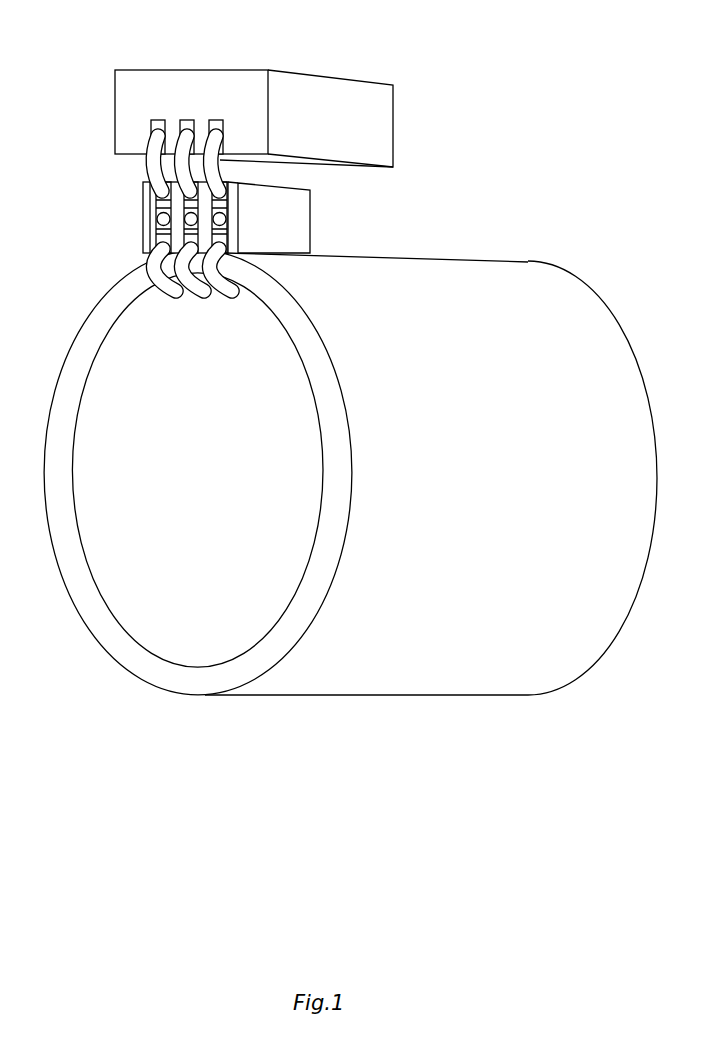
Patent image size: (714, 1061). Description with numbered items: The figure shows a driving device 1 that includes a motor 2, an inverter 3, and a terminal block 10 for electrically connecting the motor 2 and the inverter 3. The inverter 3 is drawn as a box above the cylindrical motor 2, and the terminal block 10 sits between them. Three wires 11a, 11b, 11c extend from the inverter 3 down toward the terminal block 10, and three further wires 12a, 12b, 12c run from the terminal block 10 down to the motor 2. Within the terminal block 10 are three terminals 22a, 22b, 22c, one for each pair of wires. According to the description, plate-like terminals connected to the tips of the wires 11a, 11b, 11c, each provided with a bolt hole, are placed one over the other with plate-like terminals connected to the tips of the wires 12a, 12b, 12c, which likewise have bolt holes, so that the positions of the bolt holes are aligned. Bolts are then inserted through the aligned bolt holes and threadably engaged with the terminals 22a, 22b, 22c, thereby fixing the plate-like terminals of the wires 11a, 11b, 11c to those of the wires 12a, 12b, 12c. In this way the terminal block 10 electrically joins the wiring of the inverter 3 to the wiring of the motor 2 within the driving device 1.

The driving device 1 is at (531, 97).
The motor 2 is at (576, 276).
The inverter 3 is at (302, 70).
The terminal block 10 is at (312, 221).
The wire 11a is at (150, 140).
The wire 11b is at (176, 123).
The wire 11c is at (213, 123).
The wire 12a is at (173, 297).
The wire 12b is at (203, 297).
The wire 12c is at (233, 298).
The terminal 22a is at (156, 208).
The terminal 22b is at (156, 221).
The terminal 22c is at (212, 224).